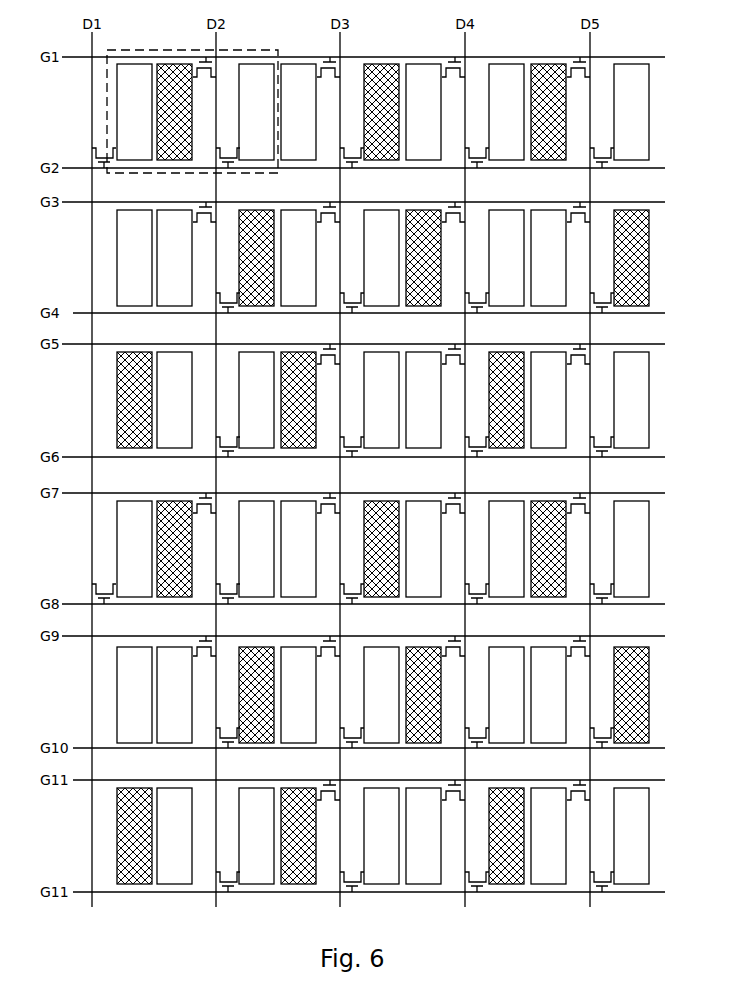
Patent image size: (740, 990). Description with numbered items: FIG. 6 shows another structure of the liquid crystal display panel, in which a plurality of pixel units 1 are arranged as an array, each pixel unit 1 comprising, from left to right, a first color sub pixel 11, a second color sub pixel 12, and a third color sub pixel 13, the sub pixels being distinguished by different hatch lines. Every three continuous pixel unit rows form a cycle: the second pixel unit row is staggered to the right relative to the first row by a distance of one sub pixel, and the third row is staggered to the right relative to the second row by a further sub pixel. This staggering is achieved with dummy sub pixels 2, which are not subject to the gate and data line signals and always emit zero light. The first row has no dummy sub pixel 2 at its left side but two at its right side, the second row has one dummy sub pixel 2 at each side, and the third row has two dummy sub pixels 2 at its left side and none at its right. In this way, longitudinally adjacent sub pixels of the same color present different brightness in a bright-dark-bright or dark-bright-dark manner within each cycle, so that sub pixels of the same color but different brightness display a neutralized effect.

The pixel unit 1 is at (122, 45).
The first color sub pixel 11 is at (133, 112).
The second color sub pixel 12 is at (172, 75).
The third color sub pixel 13 is at (258, 85).
The dummy sub pixel 2 is at (133, 276).